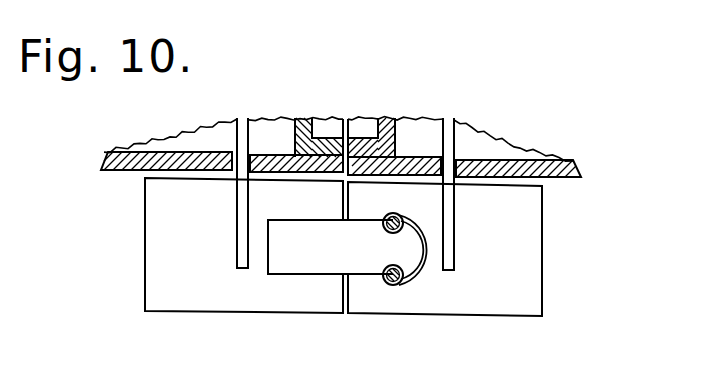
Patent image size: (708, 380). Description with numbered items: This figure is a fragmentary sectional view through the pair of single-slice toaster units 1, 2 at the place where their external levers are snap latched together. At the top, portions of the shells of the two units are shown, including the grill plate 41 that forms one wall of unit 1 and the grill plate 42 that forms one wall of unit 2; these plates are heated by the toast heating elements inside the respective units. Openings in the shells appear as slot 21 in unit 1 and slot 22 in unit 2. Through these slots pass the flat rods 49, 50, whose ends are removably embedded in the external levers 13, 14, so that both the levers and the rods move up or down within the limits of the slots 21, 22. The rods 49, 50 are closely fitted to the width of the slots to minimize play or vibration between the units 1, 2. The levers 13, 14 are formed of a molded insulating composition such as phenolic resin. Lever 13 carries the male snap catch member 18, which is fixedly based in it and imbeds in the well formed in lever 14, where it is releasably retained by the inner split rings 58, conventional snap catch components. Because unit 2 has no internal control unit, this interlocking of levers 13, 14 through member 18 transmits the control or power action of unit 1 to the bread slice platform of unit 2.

The single-slice toaster unit 1 is at (273, 155).
The single-slice toaster unit 2 is at (417, 157).
The external lever 13 is at (233, 300).
The external lever 14 is at (467, 305).
The male snap catch member 18 is at (300, 237).
The slot 21 is at (232, 153).
The slot 22 is at (458, 162).
The grill plate 41 is at (303, 118).
The grill plate 42 is at (386, 118).
The flat rod 49 is at (238, 218).
The flat rod 50 is at (448, 222).
The inner split ring 58 is at (402, 215).